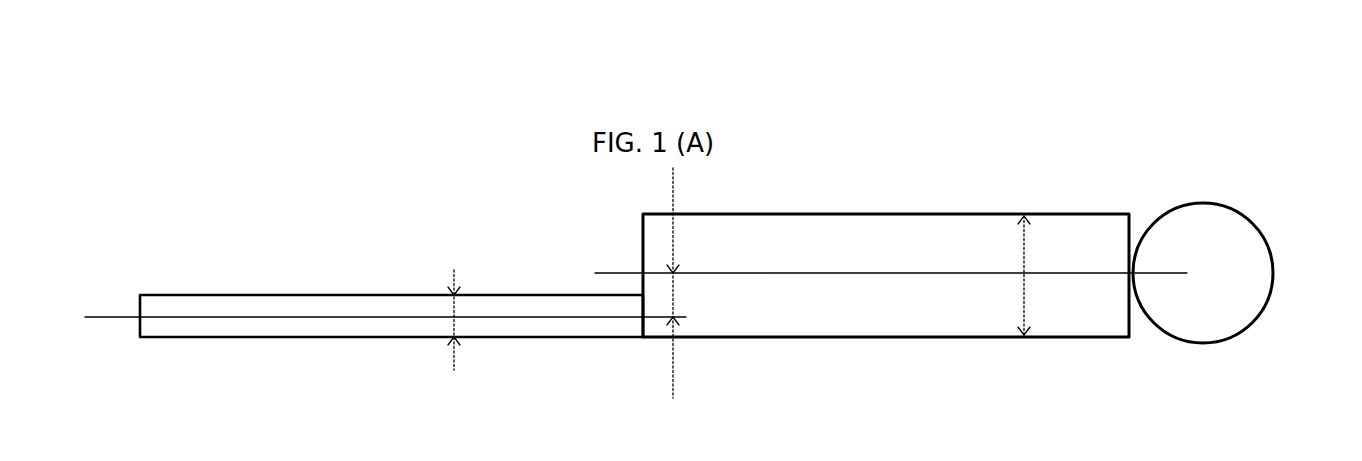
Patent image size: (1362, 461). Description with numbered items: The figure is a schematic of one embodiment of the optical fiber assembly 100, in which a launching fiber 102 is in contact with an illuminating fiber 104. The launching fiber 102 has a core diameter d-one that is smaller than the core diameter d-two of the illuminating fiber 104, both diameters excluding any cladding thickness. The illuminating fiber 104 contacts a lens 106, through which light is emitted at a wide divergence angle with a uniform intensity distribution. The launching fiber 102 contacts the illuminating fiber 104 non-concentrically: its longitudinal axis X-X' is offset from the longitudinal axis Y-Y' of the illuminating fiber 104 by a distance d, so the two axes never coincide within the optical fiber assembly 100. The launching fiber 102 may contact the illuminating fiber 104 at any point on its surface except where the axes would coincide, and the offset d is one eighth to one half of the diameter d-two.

The optical fiber assembly 100 is at (1240, 124).
The launching fiber 102 is at (350, 336).
The illuminating fiber 104 is at (806, 336).
The lens 106 is at (1185, 322).